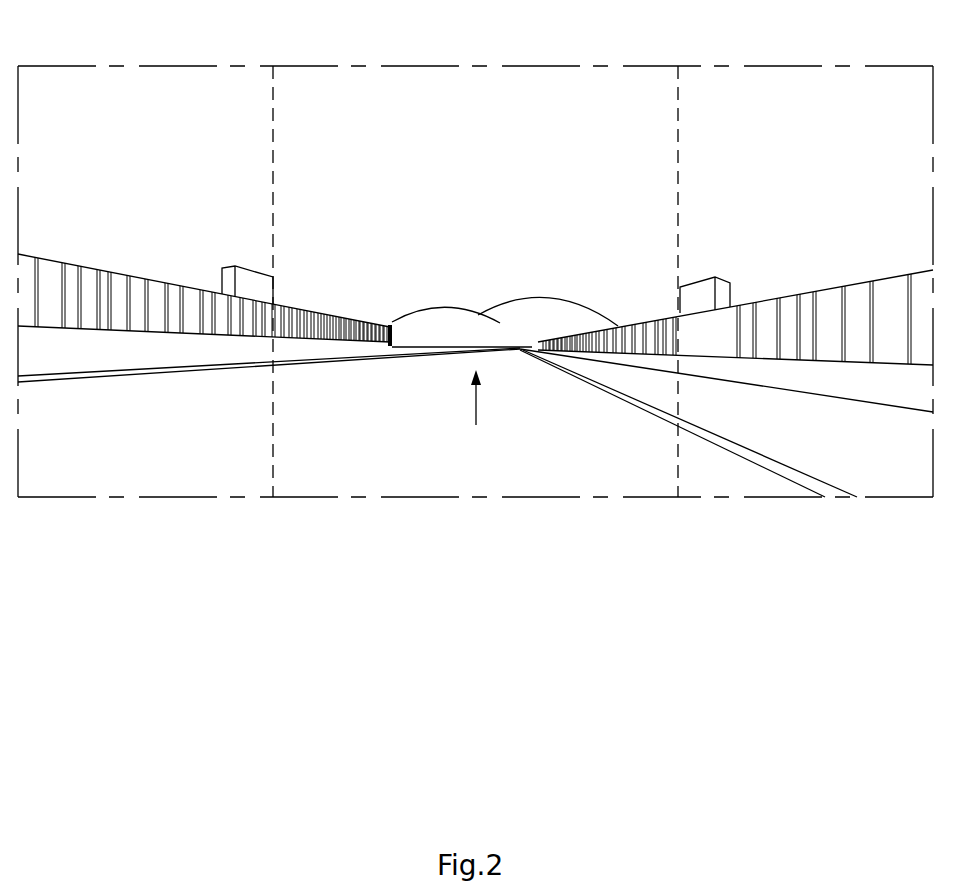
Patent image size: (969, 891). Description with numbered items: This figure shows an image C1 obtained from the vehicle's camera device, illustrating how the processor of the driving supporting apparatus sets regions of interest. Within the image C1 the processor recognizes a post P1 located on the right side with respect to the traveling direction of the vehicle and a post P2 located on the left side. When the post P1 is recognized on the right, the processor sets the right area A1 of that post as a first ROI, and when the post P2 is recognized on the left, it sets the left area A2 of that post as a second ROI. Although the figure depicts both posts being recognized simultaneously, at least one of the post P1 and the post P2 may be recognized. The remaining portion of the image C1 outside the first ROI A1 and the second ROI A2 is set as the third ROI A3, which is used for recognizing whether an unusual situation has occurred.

The image C1 is at (476, 66).
The right area A1 is at (726, 281).
The left area A2 is at (269, 281).
The third ROI A3 is at (572, 325).
The post P1 is at (703, 287).
The post P2 is at (247, 266).